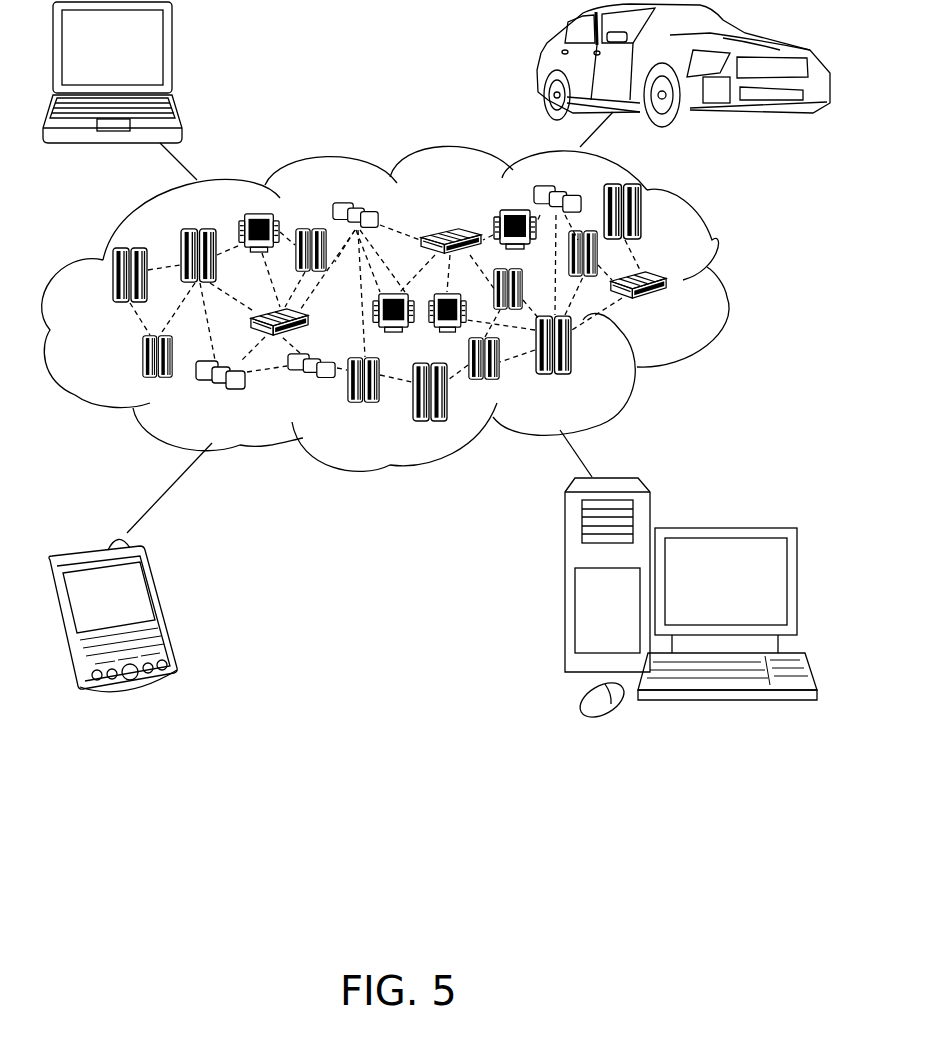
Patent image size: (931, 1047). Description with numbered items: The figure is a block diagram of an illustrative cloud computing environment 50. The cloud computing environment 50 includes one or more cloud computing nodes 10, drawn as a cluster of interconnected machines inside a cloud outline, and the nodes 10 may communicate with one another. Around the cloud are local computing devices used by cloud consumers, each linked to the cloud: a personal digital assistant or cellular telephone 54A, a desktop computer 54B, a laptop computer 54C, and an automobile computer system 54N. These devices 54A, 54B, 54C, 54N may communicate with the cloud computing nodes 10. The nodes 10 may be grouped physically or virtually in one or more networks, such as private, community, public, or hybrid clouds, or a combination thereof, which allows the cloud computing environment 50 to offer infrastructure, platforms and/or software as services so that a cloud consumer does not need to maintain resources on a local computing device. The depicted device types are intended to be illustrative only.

The cloud computing node 10 is at (690, 314).
The cloud computing environment 50 is at (720, 283).
The personal digital assistant or cellular telephone 54A is at (163, 607).
The desktop computer 54B is at (723, 527).
The laptop computer 54C is at (172, 55).
The automobile computer system 54N is at (542, 72).